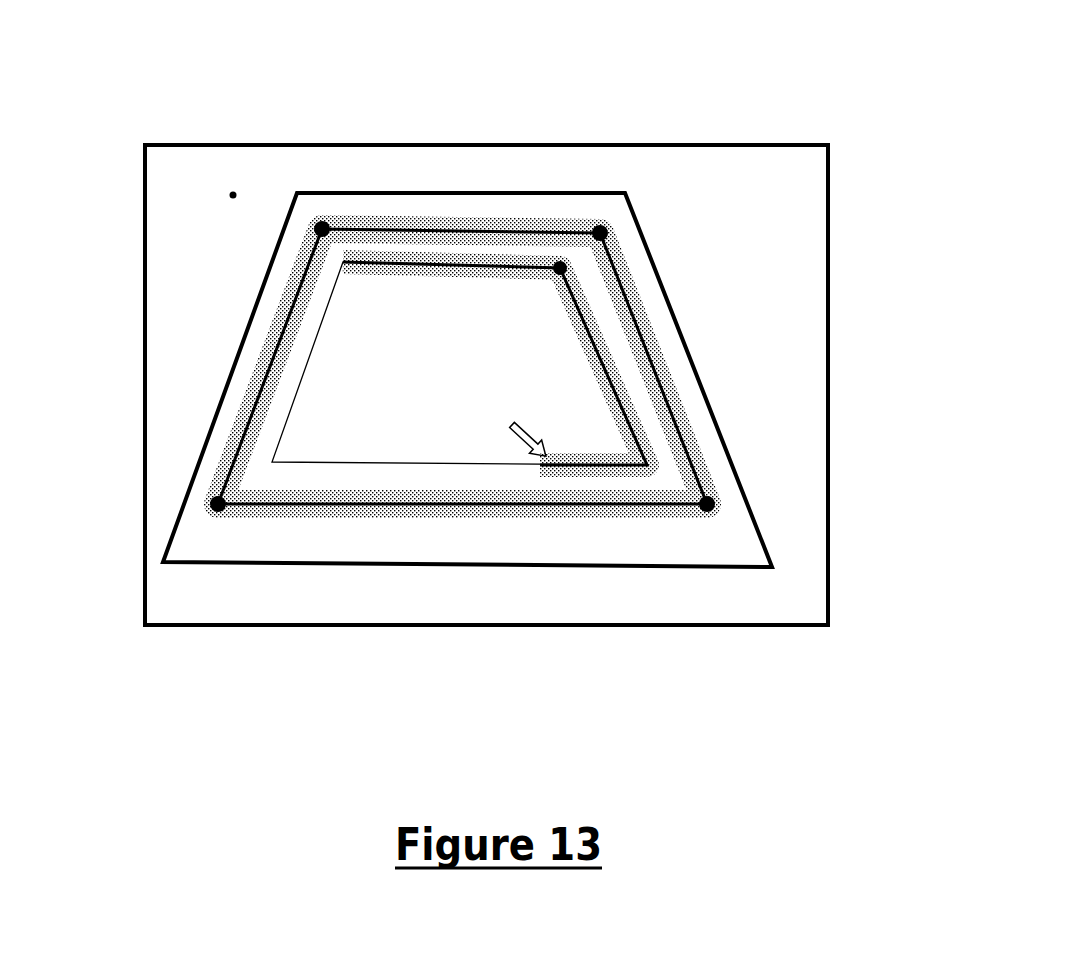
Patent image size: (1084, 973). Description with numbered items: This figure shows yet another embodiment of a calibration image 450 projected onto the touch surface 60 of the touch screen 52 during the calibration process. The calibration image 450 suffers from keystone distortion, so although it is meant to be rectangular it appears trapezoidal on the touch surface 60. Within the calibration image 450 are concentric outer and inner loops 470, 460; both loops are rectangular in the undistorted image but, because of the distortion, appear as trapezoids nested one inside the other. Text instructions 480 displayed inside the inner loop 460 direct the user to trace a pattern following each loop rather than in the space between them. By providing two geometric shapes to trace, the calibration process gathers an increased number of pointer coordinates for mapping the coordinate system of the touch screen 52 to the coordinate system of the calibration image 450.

The touch screen 52 is at (163, 146).
The touch surface 60 is at (233, 195).
The calibration image 450 is at (697, 330).
The inner loop 460 is at (370, 463).
The outer loop 470 is at (463, 507).
The text instructions 480 is at (533, 370).